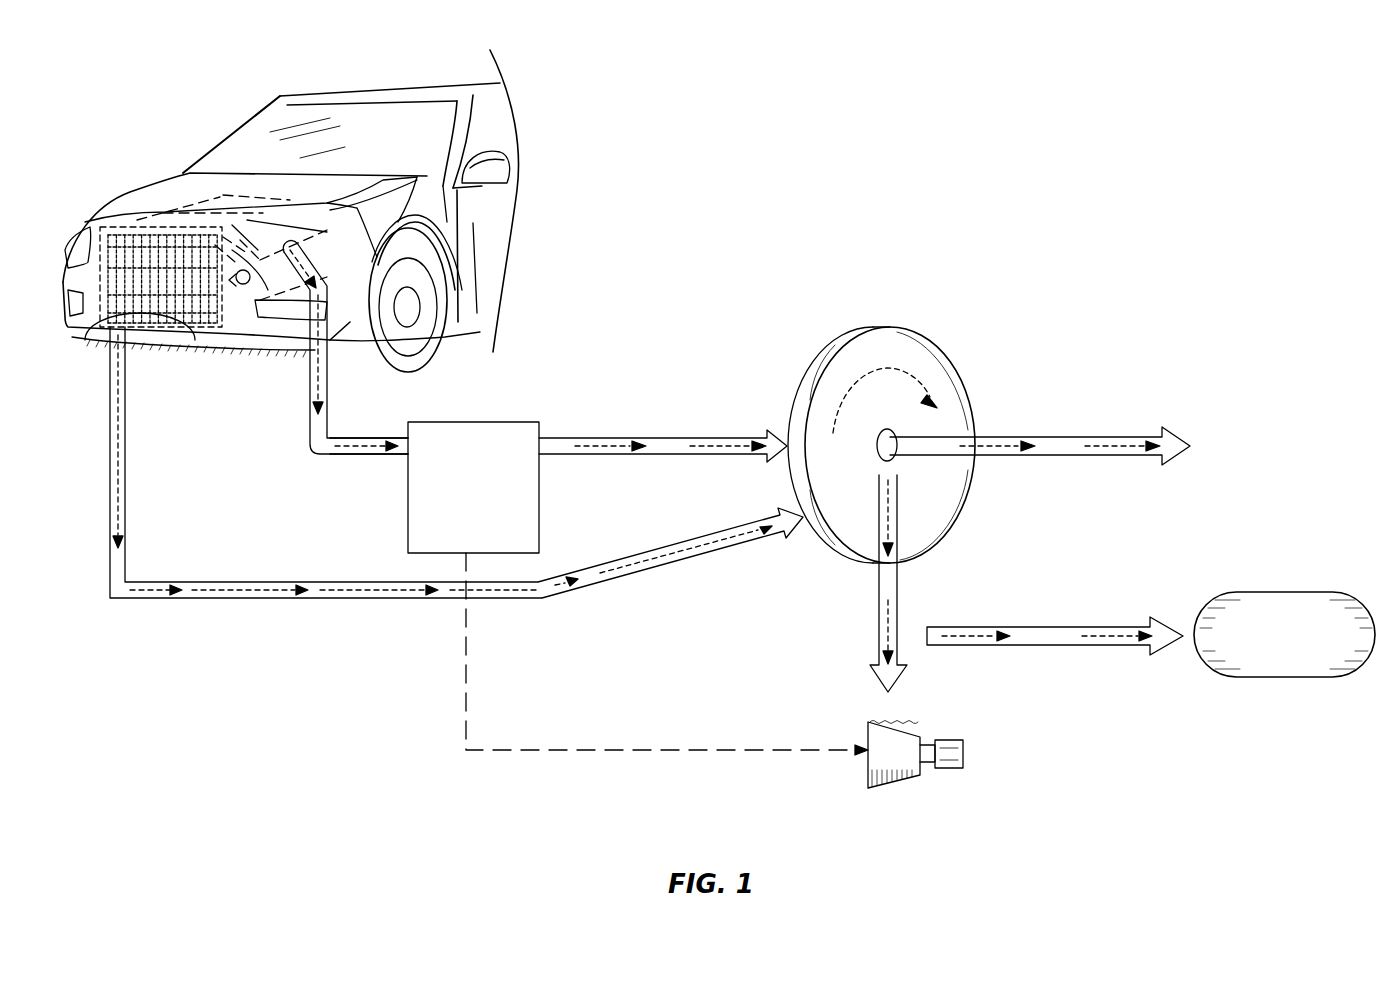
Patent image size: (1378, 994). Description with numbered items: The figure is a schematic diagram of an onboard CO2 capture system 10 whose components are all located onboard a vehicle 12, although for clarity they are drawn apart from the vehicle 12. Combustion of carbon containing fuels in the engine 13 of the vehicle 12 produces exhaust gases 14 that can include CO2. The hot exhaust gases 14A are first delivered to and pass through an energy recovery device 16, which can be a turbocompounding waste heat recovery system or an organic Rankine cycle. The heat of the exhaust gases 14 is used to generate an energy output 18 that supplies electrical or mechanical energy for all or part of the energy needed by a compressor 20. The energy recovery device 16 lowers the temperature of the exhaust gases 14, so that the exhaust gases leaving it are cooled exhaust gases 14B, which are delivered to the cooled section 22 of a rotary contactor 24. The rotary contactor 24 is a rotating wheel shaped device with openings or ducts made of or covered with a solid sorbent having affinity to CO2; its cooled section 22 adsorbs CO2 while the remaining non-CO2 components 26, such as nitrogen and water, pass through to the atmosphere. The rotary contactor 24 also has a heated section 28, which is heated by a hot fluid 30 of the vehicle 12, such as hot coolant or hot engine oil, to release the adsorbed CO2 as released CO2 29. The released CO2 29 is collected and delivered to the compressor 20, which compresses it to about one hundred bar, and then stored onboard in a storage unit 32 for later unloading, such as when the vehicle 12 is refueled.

The onboard CO2 capture system 10 is at (988, 132).
The vehicle 12 is at (365, 86).
The engine 13 is at (167, 188).
The exhaust gases 14 is at (305, 378).
The hot exhaust gases 14A is at (349, 436).
The cooled exhaust gases 14B is at (676, 436).
The energy recovery device 16 is at (486, 420).
The energy output 18 is at (663, 755).
The compressor 20 is at (896, 780).
The cooled section 22 is at (958, 380).
The rotary contactor 24 is at (907, 426).
The non-CO2 components 26 is at (1075, 436).
The heated section 28 is at (935, 525).
The released CO2 29 is at (900, 610).
The hot fluid 30 is at (214, 582).
The storage unit 32 is at (1284, 592).